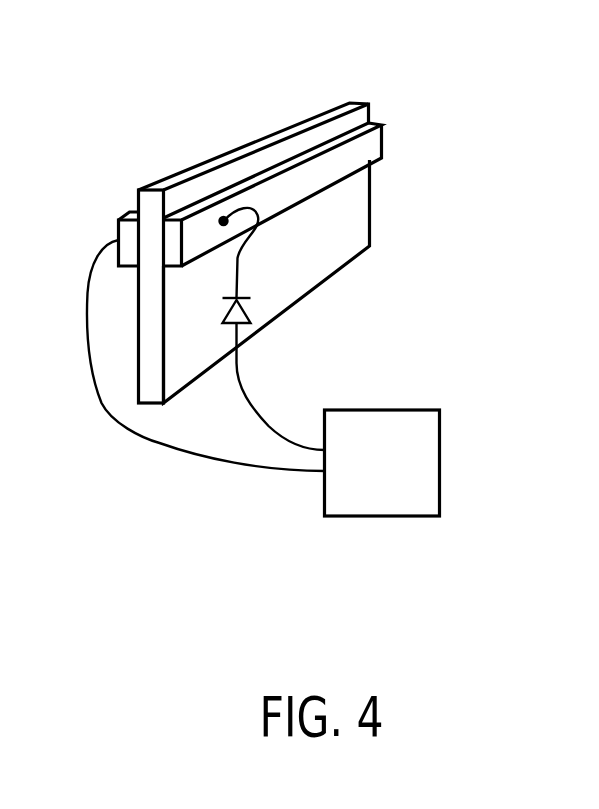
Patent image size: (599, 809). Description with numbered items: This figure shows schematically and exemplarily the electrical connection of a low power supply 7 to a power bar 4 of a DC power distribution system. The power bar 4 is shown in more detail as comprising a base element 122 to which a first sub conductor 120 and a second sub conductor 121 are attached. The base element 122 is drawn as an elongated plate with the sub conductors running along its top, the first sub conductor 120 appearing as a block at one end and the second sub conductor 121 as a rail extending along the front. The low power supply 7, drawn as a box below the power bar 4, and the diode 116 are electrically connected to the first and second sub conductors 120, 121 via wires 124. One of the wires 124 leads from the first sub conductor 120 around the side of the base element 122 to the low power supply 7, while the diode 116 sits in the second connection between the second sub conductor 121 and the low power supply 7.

The power bar 4 is at (377, 205).
The low power supply 7 is at (438, 463).
The diode 116 is at (246, 307).
The first sub conductor 120 is at (117, 211).
The second sub conductor 121 is at (382, 134).
The base element 122 is at (280, 126).
The wires 124 is at (156, 441).